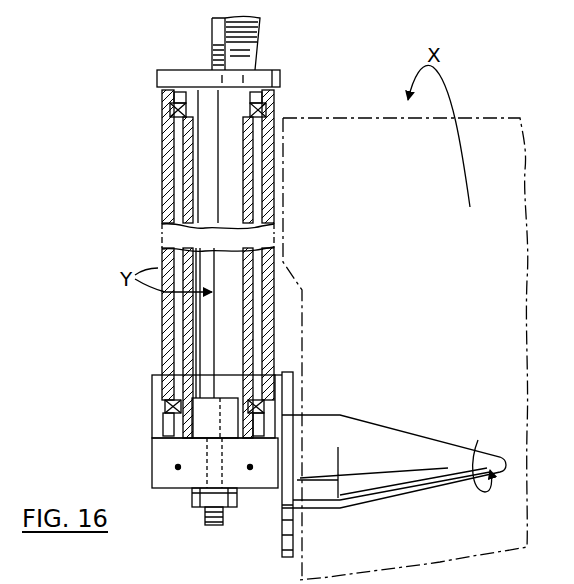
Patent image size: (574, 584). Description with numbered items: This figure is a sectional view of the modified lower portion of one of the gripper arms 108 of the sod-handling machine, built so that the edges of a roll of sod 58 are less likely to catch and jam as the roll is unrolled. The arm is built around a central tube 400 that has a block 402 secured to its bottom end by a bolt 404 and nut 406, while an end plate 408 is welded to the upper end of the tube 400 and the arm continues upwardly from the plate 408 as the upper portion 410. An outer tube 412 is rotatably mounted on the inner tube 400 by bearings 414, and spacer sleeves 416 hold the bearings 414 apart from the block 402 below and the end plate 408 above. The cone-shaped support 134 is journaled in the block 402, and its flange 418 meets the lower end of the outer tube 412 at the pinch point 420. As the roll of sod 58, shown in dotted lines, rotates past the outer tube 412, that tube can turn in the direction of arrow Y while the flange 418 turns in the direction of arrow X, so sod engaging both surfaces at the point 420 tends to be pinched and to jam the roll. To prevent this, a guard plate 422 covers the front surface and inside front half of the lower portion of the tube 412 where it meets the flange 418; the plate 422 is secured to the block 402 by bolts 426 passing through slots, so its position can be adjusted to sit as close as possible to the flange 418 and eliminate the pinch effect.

The roll of sod 58 is at (482, 116).
The gripper arm 108 is at (143, 314).
The cone-shaped support 134 is at (400, 440).
The central tube 400 is at (180, 206).
The block 402 is at (152, 484).
The bolt 404 is at (216, 525).
The nut 406 is at (200, 506).
The end plate 408 is at (281, 82).
The upward continuation of arm 410 is at (250, 48).
The outer tube 412 is at (168, 180).
The bearings 414 is at (172, 107).
The spacer sleeves 416 is at (268, 98).
The flange 418 is at (293, 399).
The pinch point 420 is at (272, 374).
The guard plate 422 is at (150, 390).
The bolts 426 is at (178, 468).